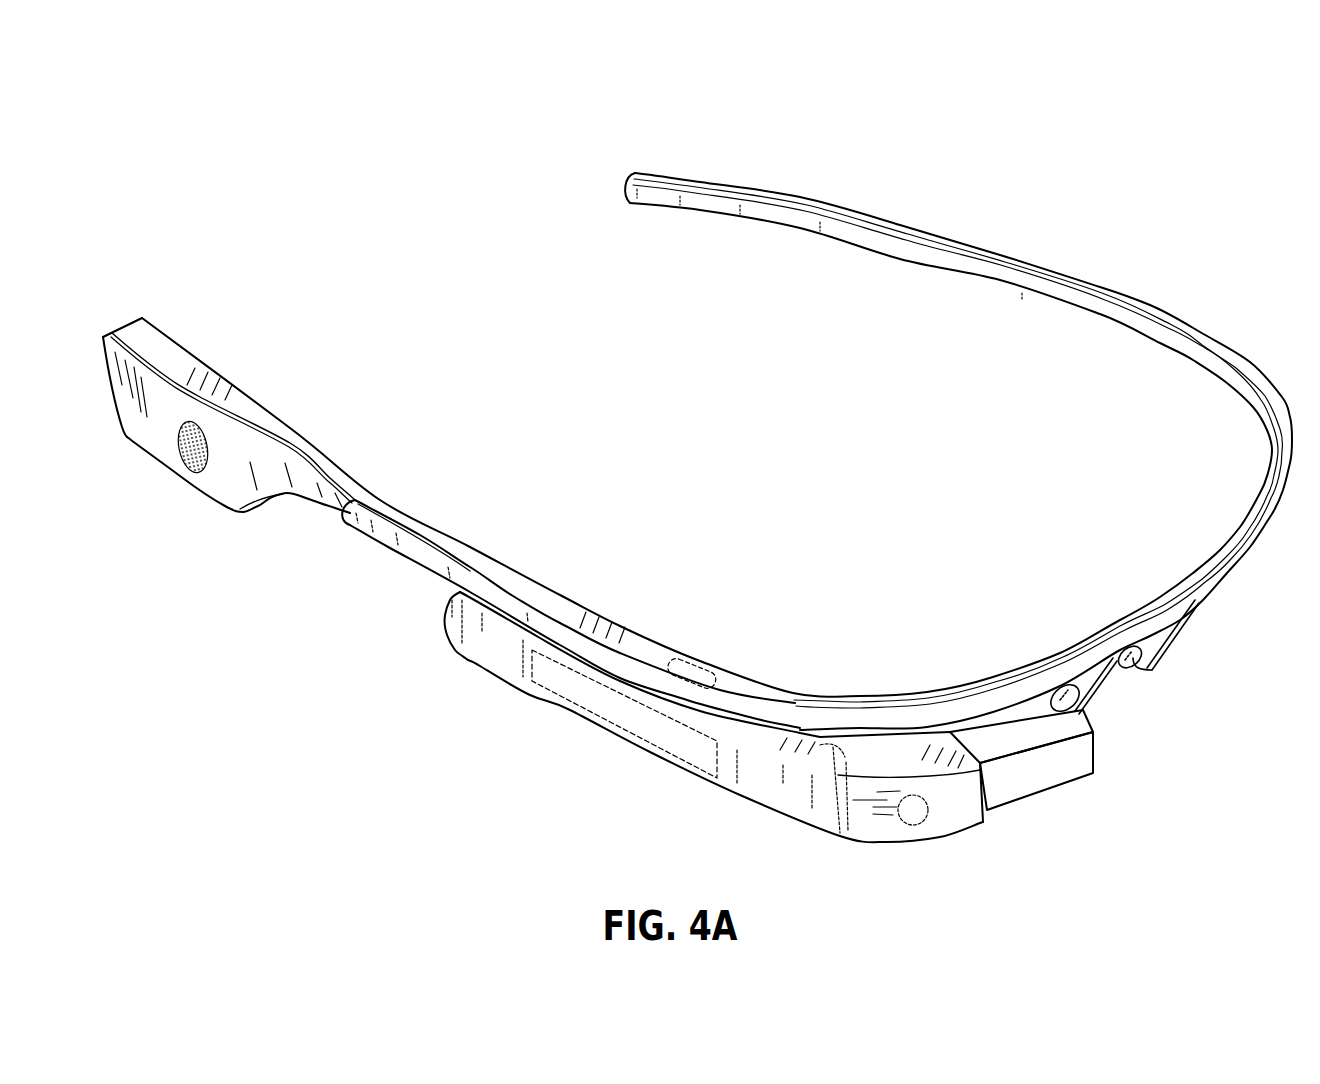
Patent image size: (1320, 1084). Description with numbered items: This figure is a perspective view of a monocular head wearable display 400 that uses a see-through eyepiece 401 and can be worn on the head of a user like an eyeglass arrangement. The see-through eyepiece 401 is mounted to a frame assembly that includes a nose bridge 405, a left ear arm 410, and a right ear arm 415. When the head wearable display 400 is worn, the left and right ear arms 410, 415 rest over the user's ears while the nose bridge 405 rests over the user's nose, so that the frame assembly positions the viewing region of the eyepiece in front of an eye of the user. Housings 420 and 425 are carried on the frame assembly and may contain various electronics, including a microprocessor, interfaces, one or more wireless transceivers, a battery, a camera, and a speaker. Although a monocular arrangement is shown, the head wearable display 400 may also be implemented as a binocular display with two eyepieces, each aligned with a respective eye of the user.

The head wearable display 400 is at (1163, 107).
The see-through eyepiece 401 is at (1050, 782).
The nose bridge 405 is at (1180, 708).
The left ear arm 410 is at (963, 250).
The right ear arm 415 is at (513, 580).
The housing 420 is at (750, 782).
The housing 425 is at (240, 497).